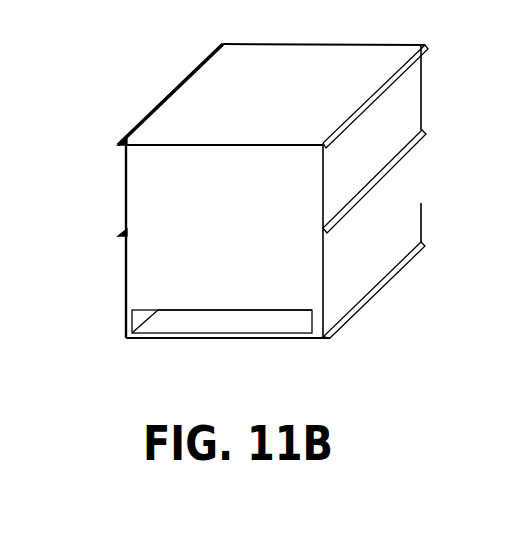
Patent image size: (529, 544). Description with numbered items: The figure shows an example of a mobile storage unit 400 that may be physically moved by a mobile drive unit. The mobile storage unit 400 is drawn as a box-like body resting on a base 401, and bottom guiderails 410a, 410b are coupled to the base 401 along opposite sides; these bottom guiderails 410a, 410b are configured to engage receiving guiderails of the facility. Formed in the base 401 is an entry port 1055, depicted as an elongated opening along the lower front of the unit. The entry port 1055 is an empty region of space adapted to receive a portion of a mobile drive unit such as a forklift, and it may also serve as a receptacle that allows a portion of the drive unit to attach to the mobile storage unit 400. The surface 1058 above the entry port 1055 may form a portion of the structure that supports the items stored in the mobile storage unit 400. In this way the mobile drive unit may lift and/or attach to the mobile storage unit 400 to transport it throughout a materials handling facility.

The mobile storage unit 400 is at (236, 239).
The base 401 is at (252, 338).
The bottom guiderail 410a is at (418, 248).
The bottom guiderail 410b is at (123, 334).
The entry port 1055 is at (221, 315).
The surface 1058 is at (278, 297).